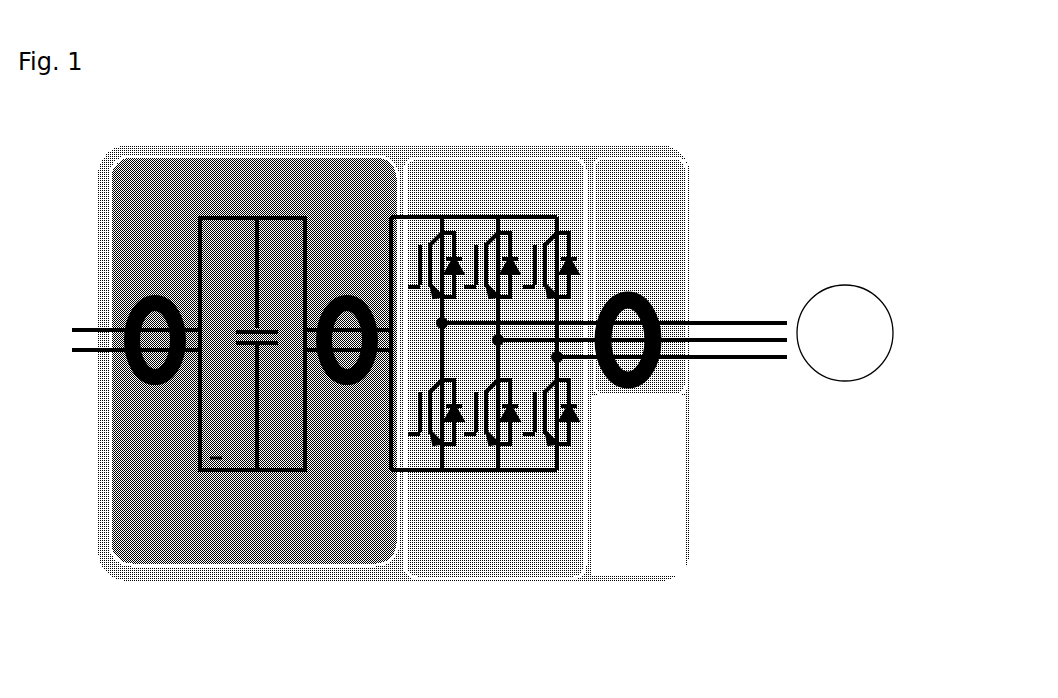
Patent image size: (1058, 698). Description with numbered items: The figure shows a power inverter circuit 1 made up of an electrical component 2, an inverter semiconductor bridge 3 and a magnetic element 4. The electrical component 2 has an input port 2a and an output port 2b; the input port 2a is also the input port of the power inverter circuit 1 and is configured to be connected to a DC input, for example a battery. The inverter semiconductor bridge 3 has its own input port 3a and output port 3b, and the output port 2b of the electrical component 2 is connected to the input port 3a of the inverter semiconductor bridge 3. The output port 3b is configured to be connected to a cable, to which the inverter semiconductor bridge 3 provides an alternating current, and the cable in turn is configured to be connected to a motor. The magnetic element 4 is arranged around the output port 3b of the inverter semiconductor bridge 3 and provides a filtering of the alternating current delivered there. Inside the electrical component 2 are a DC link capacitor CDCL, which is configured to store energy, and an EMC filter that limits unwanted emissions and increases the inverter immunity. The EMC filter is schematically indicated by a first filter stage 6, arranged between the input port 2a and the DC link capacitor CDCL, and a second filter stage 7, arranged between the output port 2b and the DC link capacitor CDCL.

The power inverter circuit 1 is at (518, 150).
The electrical component 2 is at (268, 168).
The input port 2a is at (103, 353).
The output port 2b is at (397, 212).
The inverter semiconductor bridge 3 is at (443, 178).
The input port 3a is at (407, 212).
The output port 3b is at (590, 325).
The magnetic element 4 is at (643, 383).
The first filter stage 6 is at (137, 386).
The second filter stage 7 is at (347, 386).
The DC link capacitor CDCL is at (238, 330).